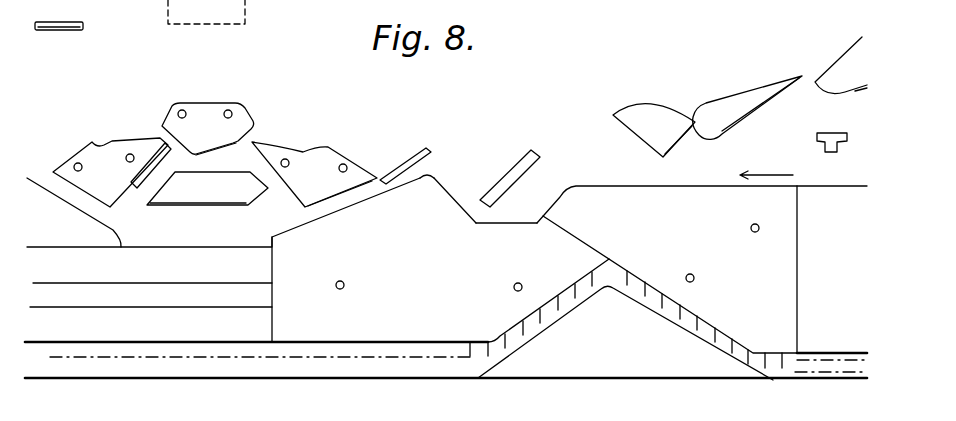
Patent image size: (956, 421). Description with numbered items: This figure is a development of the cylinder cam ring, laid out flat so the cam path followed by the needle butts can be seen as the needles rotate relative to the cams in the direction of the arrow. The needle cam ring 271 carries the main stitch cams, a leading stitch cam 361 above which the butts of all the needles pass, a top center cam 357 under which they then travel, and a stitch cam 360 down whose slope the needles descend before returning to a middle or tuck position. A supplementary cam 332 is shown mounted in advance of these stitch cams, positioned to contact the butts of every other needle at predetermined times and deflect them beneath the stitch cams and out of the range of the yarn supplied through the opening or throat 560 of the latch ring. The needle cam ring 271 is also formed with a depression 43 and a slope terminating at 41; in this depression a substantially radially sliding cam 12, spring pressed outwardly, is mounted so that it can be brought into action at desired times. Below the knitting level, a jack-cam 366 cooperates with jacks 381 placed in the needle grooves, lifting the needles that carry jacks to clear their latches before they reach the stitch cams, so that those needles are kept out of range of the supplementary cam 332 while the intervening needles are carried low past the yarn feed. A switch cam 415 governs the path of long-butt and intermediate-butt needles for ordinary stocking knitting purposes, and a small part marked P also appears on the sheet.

The plate P is at (60, 56).
The opening or throat 560 is at (206, 30).
The top center cam 357 is at (208, 129).
The stitch cam 360 is at (112, 172).
The leading stitch cam 361 is at (314, 174).
The bar 332 is at (401, 159).
The radially sliding cam 12 is at (509, 161).
The needle cam ring 271 is at (447, 265).
The slope terminal 41 is at (432, 189).
The depression 43 is at (510, 230).
The switch cam 415 is at (741, 93).
The jacks 381 is at (663, 308).
The jack-cam 366 is at (446, 359).